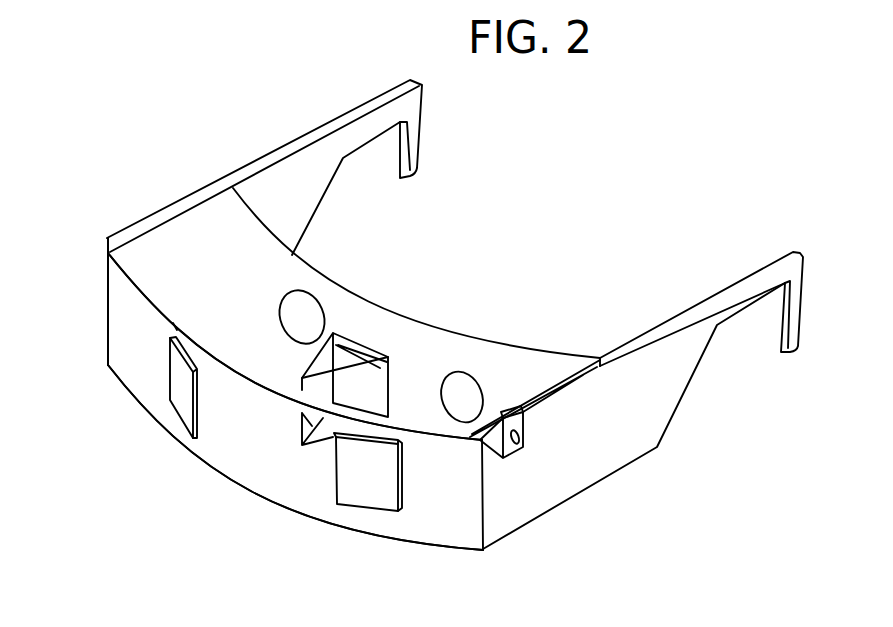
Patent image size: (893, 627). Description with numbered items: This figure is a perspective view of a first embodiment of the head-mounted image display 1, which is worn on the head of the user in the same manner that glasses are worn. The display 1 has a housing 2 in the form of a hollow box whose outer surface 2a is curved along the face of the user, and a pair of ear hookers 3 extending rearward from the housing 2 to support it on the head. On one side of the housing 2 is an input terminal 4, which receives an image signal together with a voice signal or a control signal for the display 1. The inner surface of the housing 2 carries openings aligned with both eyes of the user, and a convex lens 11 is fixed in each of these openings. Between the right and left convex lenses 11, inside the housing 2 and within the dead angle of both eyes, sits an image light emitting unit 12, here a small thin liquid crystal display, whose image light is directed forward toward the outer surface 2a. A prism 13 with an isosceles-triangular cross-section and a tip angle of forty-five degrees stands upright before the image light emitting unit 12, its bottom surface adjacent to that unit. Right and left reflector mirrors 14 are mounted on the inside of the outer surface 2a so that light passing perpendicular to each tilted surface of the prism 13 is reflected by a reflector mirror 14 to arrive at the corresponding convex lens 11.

The head-mounted image display 1 is at (499, 276).
The housing 2 is at (168, 275).
The outer surface 2a is at (130, 340).
The ear hookers 3 is at (303, 178).
The input terminal 4 is at (515, 450).
The convex lens 11 is at (302, 308).
The image light emitting unit 12 is at (362, 345).
The prism 13 is at (302, 445).
The reflector mirrors 14 is at (185, 400).